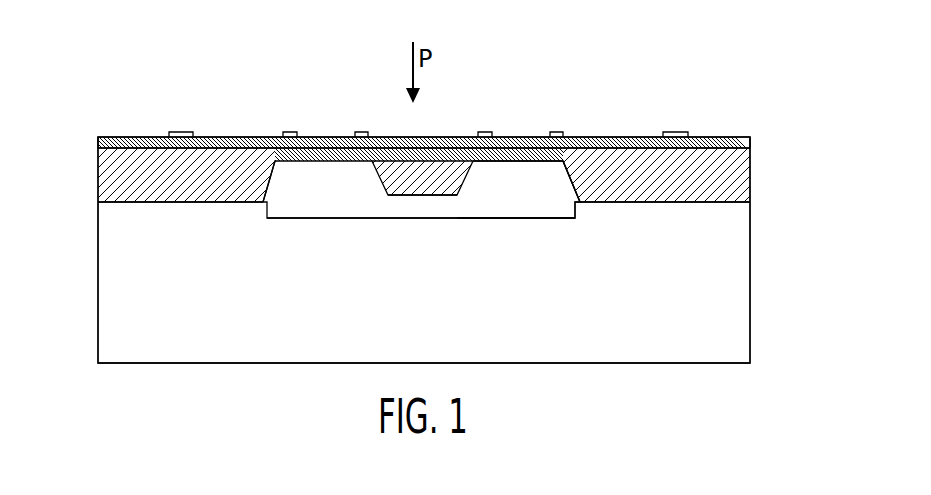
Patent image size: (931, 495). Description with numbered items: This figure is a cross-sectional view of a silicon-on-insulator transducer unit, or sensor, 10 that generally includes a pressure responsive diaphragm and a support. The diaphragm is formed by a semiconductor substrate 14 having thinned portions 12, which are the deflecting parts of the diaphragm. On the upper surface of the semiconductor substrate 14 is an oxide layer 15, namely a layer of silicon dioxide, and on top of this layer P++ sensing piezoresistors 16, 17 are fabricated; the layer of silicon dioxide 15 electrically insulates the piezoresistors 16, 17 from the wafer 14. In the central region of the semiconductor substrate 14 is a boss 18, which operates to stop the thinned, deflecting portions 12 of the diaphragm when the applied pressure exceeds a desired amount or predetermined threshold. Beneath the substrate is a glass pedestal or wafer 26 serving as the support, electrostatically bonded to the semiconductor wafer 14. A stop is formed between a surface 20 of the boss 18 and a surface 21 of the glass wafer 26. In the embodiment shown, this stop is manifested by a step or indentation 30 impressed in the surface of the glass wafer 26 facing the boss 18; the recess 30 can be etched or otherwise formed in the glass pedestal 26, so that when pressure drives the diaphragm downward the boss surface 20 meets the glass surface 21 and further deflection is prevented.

The transducer unit 10 is at (219, 74).
The thinned portion 12 is at (322, 163).
The semiconductor substrate 14 is at (98, 180).
The oxide layer 15 is at (750, 140).
The sensing piezoresistor 16 is at (488, 131).
The sensing piezoresistor 17 is at (560, 131).
The boss 18 is at (469, 175).
The surface of boss 20 is at (442, 197).
The surface of glass wafer 21 is at (404, 219).
The glass pedestal 26 is at (740, 333).
The step or indentation 30 is at (552, 208).